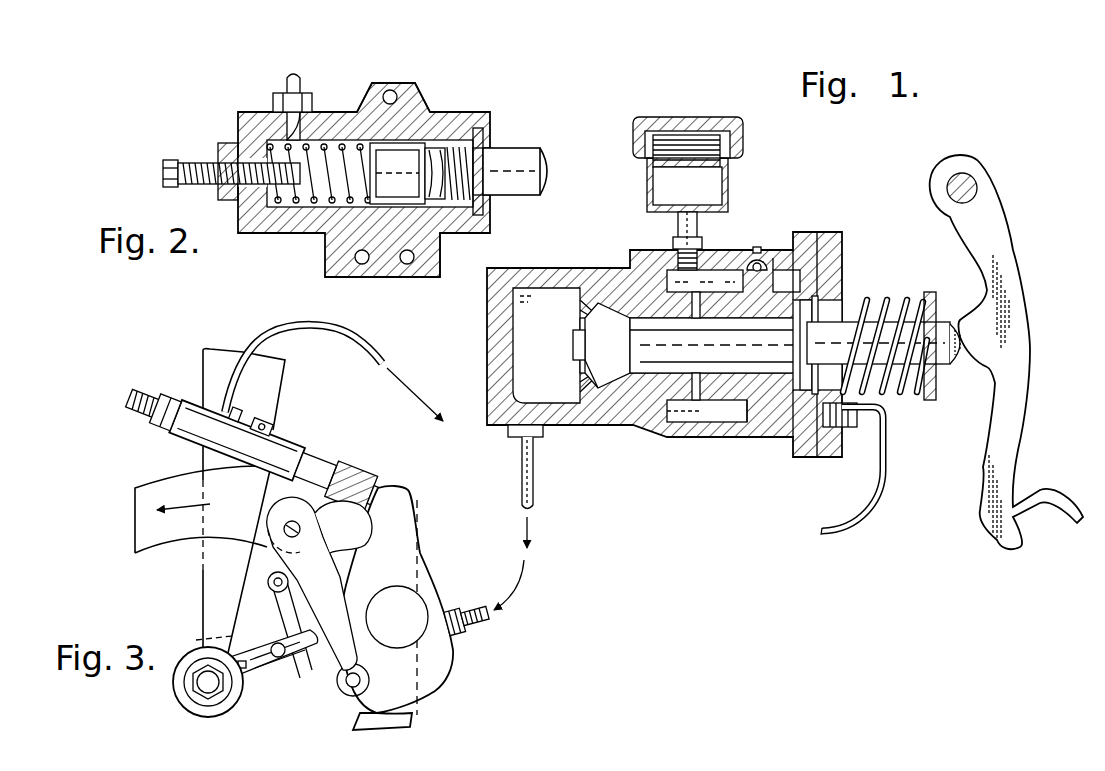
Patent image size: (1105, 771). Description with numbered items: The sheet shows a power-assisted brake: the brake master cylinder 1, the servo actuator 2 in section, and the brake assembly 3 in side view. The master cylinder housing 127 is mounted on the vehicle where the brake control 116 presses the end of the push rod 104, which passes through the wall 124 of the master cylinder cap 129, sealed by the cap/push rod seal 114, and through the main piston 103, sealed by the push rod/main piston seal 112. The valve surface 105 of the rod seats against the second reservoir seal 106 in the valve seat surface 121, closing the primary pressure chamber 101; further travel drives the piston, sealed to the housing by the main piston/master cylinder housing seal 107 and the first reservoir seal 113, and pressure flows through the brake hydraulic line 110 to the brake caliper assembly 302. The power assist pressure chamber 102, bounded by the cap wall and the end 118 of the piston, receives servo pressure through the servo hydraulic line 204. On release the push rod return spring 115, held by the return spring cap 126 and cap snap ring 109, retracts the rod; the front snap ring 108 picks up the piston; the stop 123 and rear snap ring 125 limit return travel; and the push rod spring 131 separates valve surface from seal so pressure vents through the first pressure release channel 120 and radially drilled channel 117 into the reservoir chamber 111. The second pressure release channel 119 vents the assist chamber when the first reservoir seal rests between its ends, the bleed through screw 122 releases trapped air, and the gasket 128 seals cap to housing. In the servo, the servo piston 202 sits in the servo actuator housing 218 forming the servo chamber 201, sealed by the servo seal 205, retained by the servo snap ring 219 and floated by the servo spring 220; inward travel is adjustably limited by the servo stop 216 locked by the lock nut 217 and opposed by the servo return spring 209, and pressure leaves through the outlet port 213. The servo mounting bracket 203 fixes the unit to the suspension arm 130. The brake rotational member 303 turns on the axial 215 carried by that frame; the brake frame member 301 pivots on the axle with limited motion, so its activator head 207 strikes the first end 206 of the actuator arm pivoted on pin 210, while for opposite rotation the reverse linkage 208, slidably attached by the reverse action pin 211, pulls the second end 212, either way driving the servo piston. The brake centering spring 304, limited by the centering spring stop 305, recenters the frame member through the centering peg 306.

In FIG. 1, the brake master cylinder 1 is at (643, 492).
In FIG. 2, the servo actuator 2 is at (462, 93).
In FIG. 3, the brake assembly 3 is at (503, 682).
In FIG. 1, the primary pressure chamber 101 is at (548, 290).
In FIG. 1, the power assist pressure chamber 102 is at (777, 440).
In FIG. 1, the main piston 103 is at (568, 290).
In FIG. 1, the push rod 104 is at (573, 345).
In FIG. 1, the valve surface 105 is at (657, 357).
In FIG. 1, the second reservoir seal 106 is at (640, 330).
In FIG. 1, the main piston/master cylinder housing seal 107 is at (665, 266).
In FIG. 1, the front snap ring 108 is at (582, 365).
In FIG. 1, the cap snap ring 109 is at (942, 372).
In FIG. 1, the brake hydraulic line 110 is at (533, 480).
In FIG. 3, the brake hydraulic line 110 is at (487, 627).
In FIG. 1, the reservoir chamber 111 is at (740, 188).
In FIG. 1, the push rod/main piston seal 112 is at (700, 410).
In FIG. 1, the first reservoir seal 113 is at (735, 445).
In FIG. 1, the cap/push rod seal 114 is at (850, 300).
In FIG. 1, the push rod return spring 115 is at (888, 300).
In FIG. 1, the brake control 116 is at (1010, 445).
In FIG. 1, the radially drilled channel 117 is at (715, 290).
In FIG. 1, the end of the main piston 118 is at (852, 460).
In FIG. 1, the second pressure release channel 119 is at (780, 252).
In FIG. 1, the first pressure release channel 120 is at (585, 308).
In FIG. 1, the valve seat surface 121 is at (590, 415).
In FIG. 1, the bleed through screw 122 is at (756, 250).
In FIG. 1, the stop 123 is at (720, 344).
In FIG. 1, the wall of master cylinder cap 124 is at (830, 292).
In FIG. 1, the rear snap ring 125 is at (812, 336).
In FIG. 1, the return spring cap 126 is at (932, 295).
In FIG. 1, the master cylinder housing 127 is at (605, 425).
In FIG. 1, the gasket 128 is at (814, 460).
In FIG. 1, the master cylinder cap 129 is at (822, 235).
In FIG. 3, the suspension arm of the vehicle 130 is at (280, 403).
In FIG. 1, the push rod spring 131 is at (720, 425).
In FIG. 2, the servo chamber 201 is at (313, 237).
In FIG. 2, the servo piston 202 is at (513, 152).
In FIG. 3, the servo piston 202 is at (318, 462).
In FIG. 2, the servo mounting bracket 203 is at (410, 86).
In FIG. 2, the servo hydraulic line 204 is at (293, 73).
In FIG. 1, the servo hydraulic line 204 is at (868, 515).
In FIG. 3, the servo hydraulic line 204 is at (255, 368).
In FIG. 2, the servo seal 205 is at (478, 120).
In FIG. 3, the first end of the servo actuator arm 206 is at (360, 470).
In FIG. 3, the activator head 207 is at (415, 492).
In FIG. 3, the reverse linkage 208 is at (335, 590).
In FIG. 2, the servo return spring 209 is at (260, 233).
In FIG. 3, the pin 210 is at (302, 534).
In FIG. 3, the reverse action pin 211 is at (348, 690).
In FIG. 3, the second end of the actuator arm 212 is at (237, 593).
In FIG. 2, the outlet port 213 is at (300, 122).
In FIG. 3, the axial 215 is at (208, 700).
In FIG. 2, the servo stop 216 is at (186, 158).
In FIG. 3, the servo stop 216 is at (143, 395).
In FIG. 2, the lock nut 217 is at (222, 143).
In FIG. 3, the lock nut 217 is at (172, 405).
In FIG. 2, the servo actuator housing 218 is at (463, 240).
In FIG. 2, the servo snap ring 219 is at (484, 204).
In FIG. 2, the servo spring 220 is at (438, 165).
In FIG. 3, the brake frame member 301 is at (420, 560).
In FIG. 3, the brake caliper assembly 302 is at (422, 603).
In FIG. 3, the brake rotational member 303 is at (160, 470).
In FIG. 3, the brake centering spring 304 is at (258, 690).
In FIG. 3, the centering spring stop 305 is at (280, 630).
In FIG. 3, the centering peg 306 is at (279, 658).